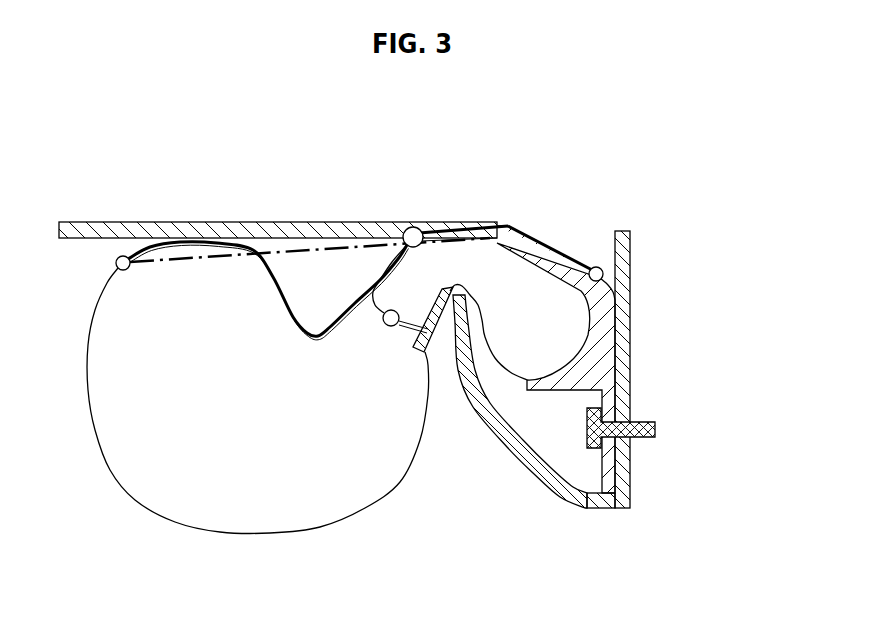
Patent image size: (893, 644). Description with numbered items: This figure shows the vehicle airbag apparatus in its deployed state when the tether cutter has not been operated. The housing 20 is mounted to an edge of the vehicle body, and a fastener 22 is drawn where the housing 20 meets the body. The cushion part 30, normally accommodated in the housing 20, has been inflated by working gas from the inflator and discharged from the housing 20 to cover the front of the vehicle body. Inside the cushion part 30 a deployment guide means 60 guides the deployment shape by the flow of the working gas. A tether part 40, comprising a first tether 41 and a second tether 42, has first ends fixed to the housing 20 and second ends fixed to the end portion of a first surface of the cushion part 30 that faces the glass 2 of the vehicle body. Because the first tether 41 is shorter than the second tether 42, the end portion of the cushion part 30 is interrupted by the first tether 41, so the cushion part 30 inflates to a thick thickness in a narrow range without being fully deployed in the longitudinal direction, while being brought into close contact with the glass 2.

The glass 2 is at (133, 226).
The housing 20 is at (590, 362).
The fastener 22 is at (647, 428).
The cushion part 30 is at (263, 512).
The tether part 40 is at (318, 215).
The first tether 41 is at (198, 253).
The second tether 42 is at (283, 298).
The deployment guide means 60 is at (385, 327).